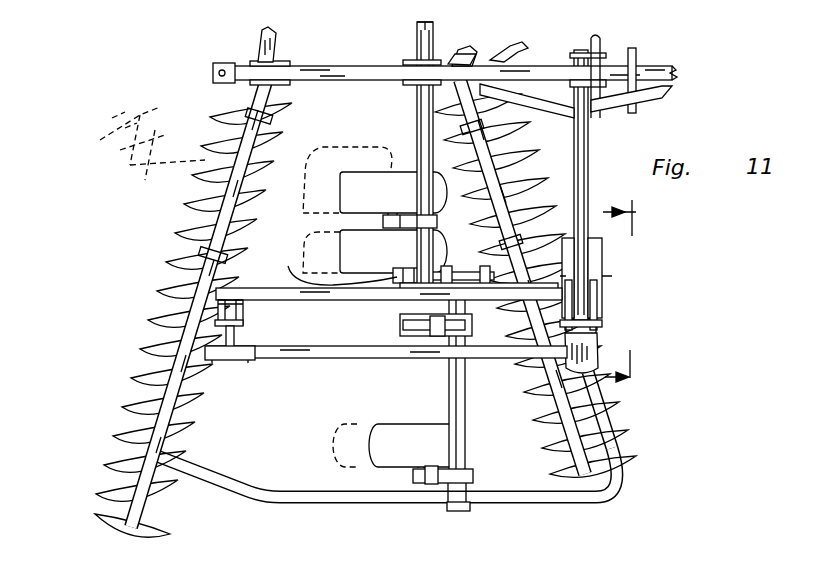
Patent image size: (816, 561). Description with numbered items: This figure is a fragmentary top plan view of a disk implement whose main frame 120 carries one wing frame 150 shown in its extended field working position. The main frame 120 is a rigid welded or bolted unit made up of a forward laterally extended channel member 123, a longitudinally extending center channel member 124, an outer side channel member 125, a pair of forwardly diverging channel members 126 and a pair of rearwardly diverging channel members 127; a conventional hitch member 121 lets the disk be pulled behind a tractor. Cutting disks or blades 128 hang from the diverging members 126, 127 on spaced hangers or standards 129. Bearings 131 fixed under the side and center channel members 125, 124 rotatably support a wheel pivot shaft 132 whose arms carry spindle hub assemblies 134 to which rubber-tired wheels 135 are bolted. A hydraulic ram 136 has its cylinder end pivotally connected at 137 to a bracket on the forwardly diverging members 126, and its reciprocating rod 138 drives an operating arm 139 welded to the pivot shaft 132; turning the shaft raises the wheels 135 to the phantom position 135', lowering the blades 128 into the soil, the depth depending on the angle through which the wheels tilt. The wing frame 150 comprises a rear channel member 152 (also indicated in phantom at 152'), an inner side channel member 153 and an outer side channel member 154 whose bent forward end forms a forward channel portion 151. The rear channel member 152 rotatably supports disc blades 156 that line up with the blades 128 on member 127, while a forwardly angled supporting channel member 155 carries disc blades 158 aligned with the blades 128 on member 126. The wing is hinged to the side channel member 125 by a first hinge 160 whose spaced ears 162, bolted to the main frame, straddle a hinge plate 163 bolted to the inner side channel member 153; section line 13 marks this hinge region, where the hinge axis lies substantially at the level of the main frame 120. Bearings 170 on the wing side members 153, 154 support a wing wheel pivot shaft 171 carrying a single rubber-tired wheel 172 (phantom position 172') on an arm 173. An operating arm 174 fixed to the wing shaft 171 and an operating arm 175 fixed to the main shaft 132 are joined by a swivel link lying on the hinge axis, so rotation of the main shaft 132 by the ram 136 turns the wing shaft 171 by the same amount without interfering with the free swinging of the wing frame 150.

The section line 13- 13 is at (636, 291).
The main frame 120 is at (170, 238).
The hitch member 121 is at (665, 65).
The forward laterally extended channel member 123 is at (590, 148).
The center channel member 124 is at (303, 65).
The outer side channel member 125 is at (258, 301).
The forwardly diverging channel members 126 is at (465, 53).
The rearwardly diverging channel members 127 is at (277, 44).
The cutting disks or blades 128 is at (236, 132).
The gang shaft collar 129 is at (271, 114).
The bearings 131 is at (412, 54).
The wheel pivot shaft 132 is at (433, 28).
The spindle hub assemblies 134 is at (397, 146).
The rubber-tired wheels 135 is at (386, 175).
The phantom position of wheels 135' is at (347, 192).
The hydraulic ram 136 is at (437, 221).
The pivotal connection of ram cylinder end 137 is at (516, 298).
The reciprocating rod 138 is at (420, 270).
The operating arm 139 is at (324, 270).
The wing frame 150 is at (512, 506).
The forward channel portion 151 is at (620, 403).
The rear channel member 152 is at (189, 320).
The left disc gang (raised position) 152' is at (121, 143).
The inner side channel member 153 is at (306, 364).
The outer side channel member 154 is at (262, 503).
The forwardly angled supporting channel member 155 is at (550, 426).
The disc blades 156 is at (133, 395).
The disc blades 158 is at (540, 392).
The first hinge 160 is at (252, 322).
The hinge ears 162 is at (216, 304).
The hinge plate 163 is at (240, 358).
The bearings 170 is at (465, 364).
The wing wheel pivot shaft 171 is at (448, 383).
The lower hydraulic cylinder 172 is at (390, 430).
The lower hydraulic cylinder (alternate position) 172' is at (340, 444).
The arm 173 is at (441, 484).
The operating arm 174 is at (428, 340).
The operating arm 175 is at (401, 326).